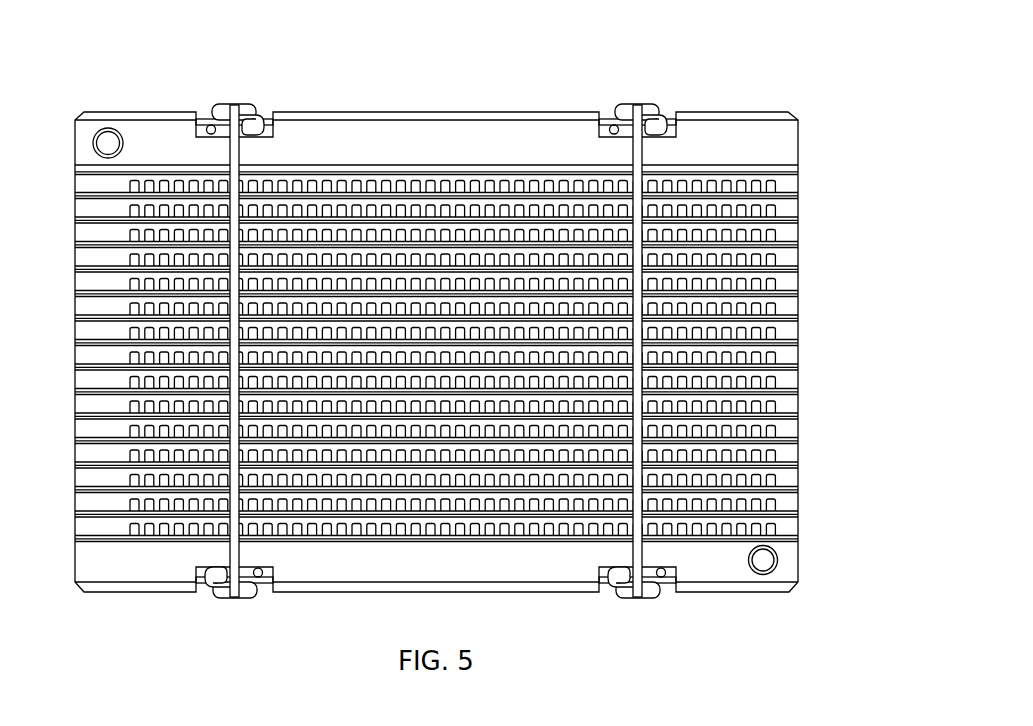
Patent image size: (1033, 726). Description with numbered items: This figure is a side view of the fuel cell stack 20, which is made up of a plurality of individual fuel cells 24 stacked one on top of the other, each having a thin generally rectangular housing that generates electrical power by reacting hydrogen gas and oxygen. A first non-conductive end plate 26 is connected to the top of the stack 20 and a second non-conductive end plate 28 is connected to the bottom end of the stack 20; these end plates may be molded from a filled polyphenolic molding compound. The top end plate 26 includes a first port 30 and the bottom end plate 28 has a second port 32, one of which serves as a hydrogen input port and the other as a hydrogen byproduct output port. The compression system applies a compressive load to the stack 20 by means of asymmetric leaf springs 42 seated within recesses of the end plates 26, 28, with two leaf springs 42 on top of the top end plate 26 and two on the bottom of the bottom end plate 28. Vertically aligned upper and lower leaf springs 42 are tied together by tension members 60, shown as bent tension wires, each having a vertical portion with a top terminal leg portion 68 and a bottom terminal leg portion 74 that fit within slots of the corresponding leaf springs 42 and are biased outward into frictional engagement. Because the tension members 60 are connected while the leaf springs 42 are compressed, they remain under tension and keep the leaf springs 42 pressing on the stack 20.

The fuel cell stack 20 is at (454, 332).
The fuel cell 24 is at (786, 332).
The first non-conductive end plate 26 is at (782, 146).
The second non-conductive end plate 28 is at (793, 580).
The first port 30 is at (110, 127).
The second port 32 is at (776, 552).
The asymmetric leaf spring 42 is at (267, 112).
The tension member 60 is at (245, 105).
The terminal leg portion 68 is at (202, 127).
The terminal leg portion 74 is at (203, 577).